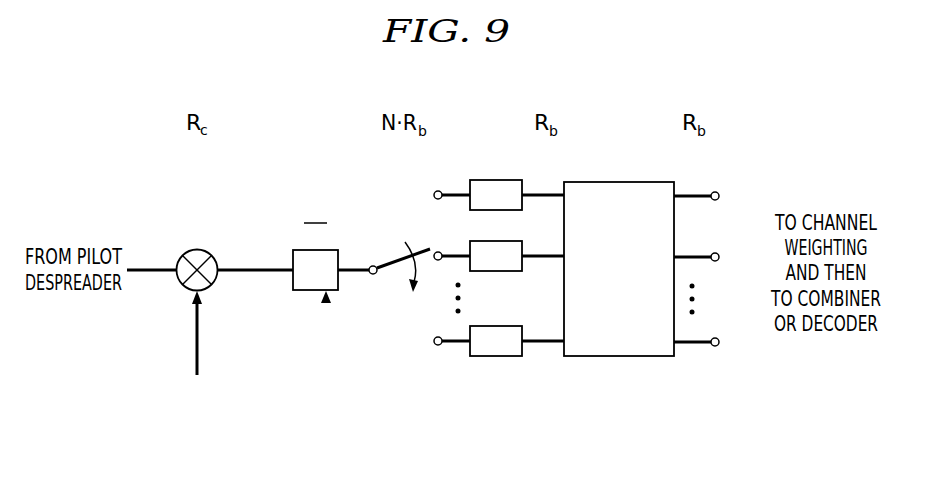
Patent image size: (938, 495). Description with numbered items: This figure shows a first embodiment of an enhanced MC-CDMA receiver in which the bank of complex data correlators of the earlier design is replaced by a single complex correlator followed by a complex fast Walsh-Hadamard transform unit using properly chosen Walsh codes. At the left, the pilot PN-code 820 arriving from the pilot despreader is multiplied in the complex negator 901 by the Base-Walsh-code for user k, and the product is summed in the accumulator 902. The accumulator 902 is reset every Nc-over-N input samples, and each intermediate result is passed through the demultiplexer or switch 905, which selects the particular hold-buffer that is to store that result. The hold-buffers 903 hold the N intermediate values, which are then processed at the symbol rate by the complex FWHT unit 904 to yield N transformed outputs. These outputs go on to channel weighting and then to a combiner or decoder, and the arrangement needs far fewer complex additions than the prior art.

The pilot PN-code 820 is at (152, 267).
The complex negator 901 is at (207, 251).
The accumulator 902 is at (293, 250).
The hold-buffers 903 is at (493, 357).
The complex FWHT unit 904 is at (618, 357).
The switch 905 is at (395, 262).